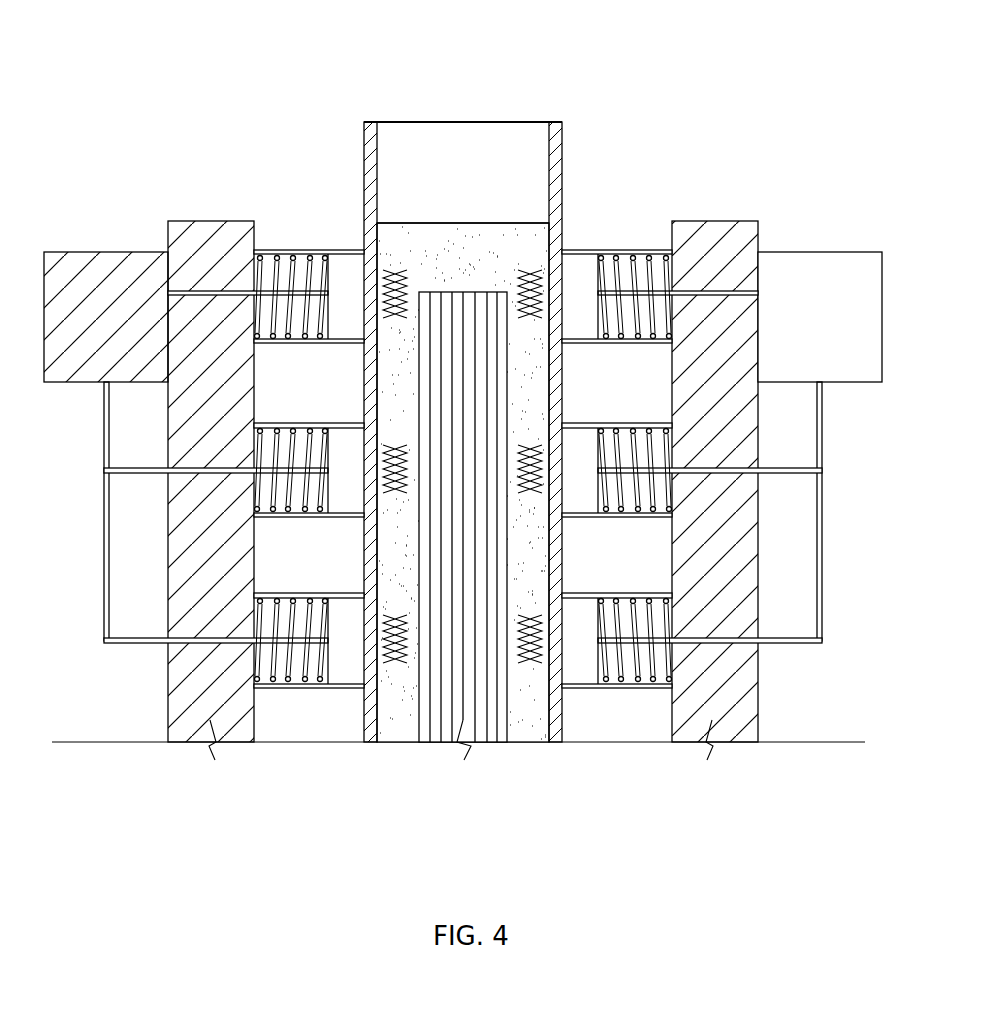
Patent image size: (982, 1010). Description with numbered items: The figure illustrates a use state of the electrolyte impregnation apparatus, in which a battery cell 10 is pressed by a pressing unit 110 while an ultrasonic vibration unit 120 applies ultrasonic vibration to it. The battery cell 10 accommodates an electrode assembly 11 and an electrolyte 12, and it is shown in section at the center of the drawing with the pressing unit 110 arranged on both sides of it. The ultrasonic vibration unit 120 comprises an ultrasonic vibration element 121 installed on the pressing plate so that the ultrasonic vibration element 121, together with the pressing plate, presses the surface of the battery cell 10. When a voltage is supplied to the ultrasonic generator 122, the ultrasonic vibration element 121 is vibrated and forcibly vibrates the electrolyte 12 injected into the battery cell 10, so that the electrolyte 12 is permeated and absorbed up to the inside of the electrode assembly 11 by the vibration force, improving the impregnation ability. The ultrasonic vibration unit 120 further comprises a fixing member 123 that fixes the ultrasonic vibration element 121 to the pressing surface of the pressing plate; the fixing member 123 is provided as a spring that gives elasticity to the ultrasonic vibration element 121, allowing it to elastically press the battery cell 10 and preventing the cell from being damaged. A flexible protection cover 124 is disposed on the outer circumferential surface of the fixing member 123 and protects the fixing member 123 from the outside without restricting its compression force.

The battery cell 10 is at (463, 494).
The electrode assembly 11 is at (483, 725).
The electrolyte 12 is at (398, 725).
The pressing unit 110 is at (757, 690).
The ultrasonic vibration unit 120 is at (320, 53).
The ultrasonic vibration element 121 is at (347, 265).
The ultrasonic generator 122 is at (77, 265).
The fixing member 123 is at (310, 243).
The protection cover 124 is at (272, 243).